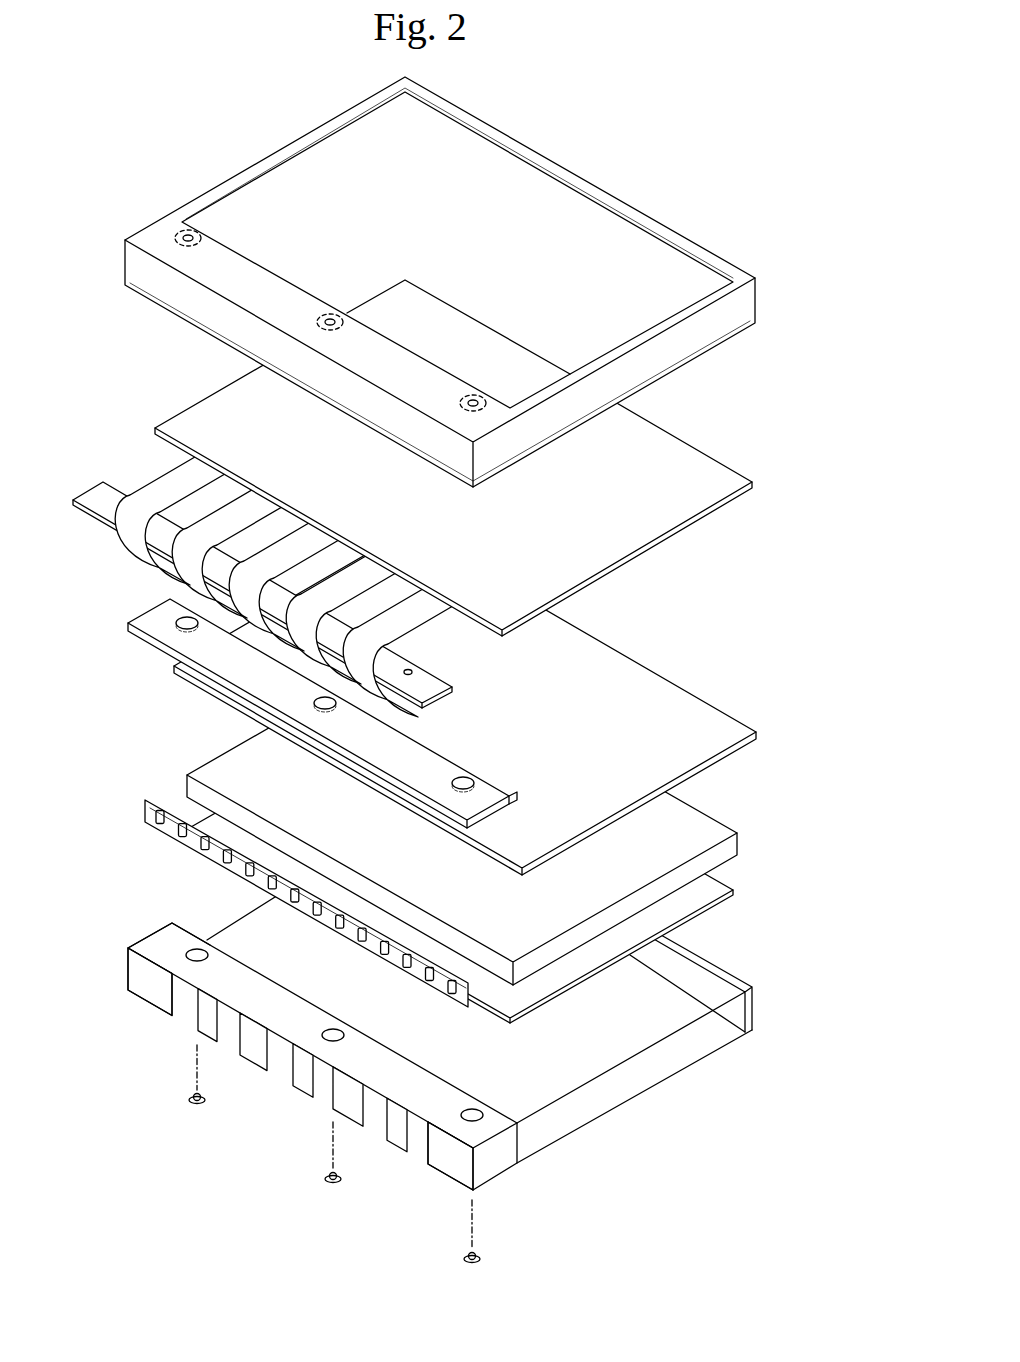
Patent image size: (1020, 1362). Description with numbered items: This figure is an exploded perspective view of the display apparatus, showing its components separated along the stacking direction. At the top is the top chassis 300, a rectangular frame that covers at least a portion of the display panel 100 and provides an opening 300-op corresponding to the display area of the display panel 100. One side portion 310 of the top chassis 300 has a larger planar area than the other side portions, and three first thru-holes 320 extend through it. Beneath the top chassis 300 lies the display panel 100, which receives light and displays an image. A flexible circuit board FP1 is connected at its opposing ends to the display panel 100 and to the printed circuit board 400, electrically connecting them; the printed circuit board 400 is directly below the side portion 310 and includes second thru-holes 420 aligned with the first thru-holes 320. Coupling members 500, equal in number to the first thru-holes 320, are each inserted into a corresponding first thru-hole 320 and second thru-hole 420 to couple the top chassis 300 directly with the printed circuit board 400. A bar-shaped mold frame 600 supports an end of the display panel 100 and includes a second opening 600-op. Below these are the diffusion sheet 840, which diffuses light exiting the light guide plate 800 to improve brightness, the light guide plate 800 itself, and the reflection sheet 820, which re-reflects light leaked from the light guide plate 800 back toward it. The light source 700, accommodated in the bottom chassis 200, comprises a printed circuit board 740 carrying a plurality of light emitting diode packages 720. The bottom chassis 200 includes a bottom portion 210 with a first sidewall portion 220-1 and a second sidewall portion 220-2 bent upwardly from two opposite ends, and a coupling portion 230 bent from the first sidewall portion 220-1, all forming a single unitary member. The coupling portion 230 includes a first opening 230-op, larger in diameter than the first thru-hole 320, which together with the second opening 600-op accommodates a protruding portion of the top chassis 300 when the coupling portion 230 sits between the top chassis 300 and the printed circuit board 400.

The display panel 100 is at (707, 476).
The bottom chassis 200 is at (432, 1059).
The bottom portion 210 is at (606, 1087).
The first sidewall portion 220-1 is at (504, 1146).
The second sidewall portion 220-2 is at (703, 992).
The coupling portion 230 is at (157, 950).
The first opening 230-op is at (197, 948).
The top chassis 300 is at (440, 280).
The opening 300-op is at (583, 249).
The side portion 310 is at (253, 280).
The first thru-hole 320 is at (192, 230).
The printed circuit board 400 is at (252, 540).
The second thru-hole 420 is at (124, 503).
The coupling member 500 is at (189, 1099).
The mold frame 600 is at (275, 696).
The second opening 600-op is at (187, 620).
The light source 700 is at (239, 903).
The light emitting diode package 720 is at (146, 817).
The printed circuit board for the light source 740 is at (146, 811).
The light guide plate 800 is at (678, 827).
The reflection sheet 820 is at (708, 890).
The diffusion sheet 840 is at (680, 710).
The flexible circuit board FP1 is at (180, 476).